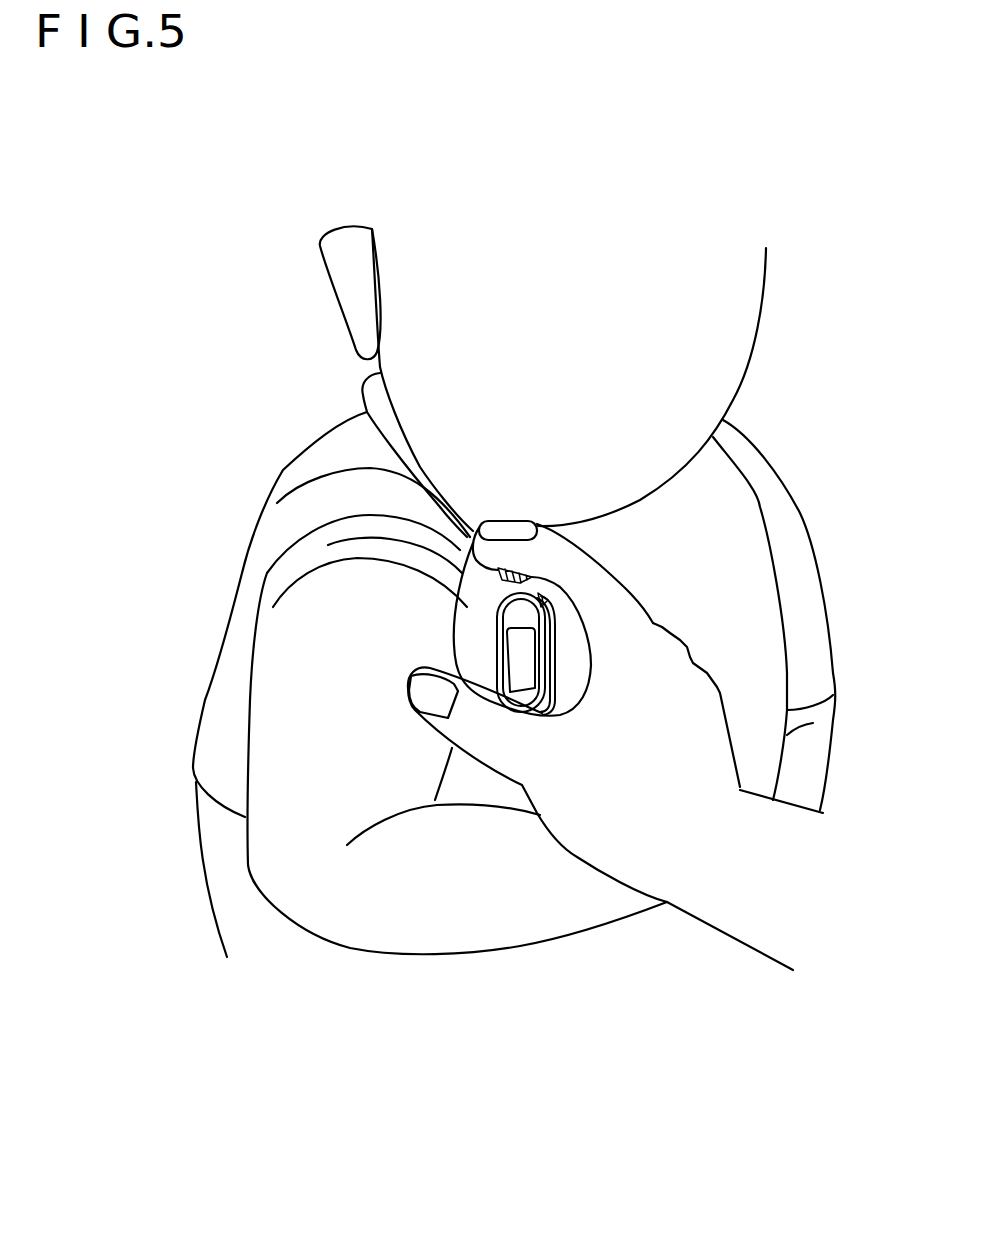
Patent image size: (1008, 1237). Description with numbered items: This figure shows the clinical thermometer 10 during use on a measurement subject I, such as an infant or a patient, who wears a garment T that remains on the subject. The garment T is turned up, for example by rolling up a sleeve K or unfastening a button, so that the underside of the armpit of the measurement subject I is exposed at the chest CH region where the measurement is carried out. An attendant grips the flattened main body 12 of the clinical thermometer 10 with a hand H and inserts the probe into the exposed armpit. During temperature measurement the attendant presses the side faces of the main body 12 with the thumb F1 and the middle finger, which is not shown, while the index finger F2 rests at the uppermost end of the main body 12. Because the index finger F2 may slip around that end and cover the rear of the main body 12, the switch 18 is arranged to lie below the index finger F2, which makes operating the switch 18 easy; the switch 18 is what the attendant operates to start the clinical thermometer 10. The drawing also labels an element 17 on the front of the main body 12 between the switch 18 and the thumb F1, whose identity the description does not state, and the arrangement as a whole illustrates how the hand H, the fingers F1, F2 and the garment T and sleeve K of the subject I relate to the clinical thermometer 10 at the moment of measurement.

The clinical thermometer 10 is at (497, 579).
The main body 12 is at (473, 622).
The operation window 17 is at (545, 600).
The switch 18 is at (501, 570).
The sleeve K is at (357, 545).
The measurement subject I is at (776, 437).
The garment T is at (760, 585).
The chest CH is at (350, 913).
The hand H is at (600, 832).
The thumb F1 is at (475, 728).
The index finger F2 is at (550, 548).